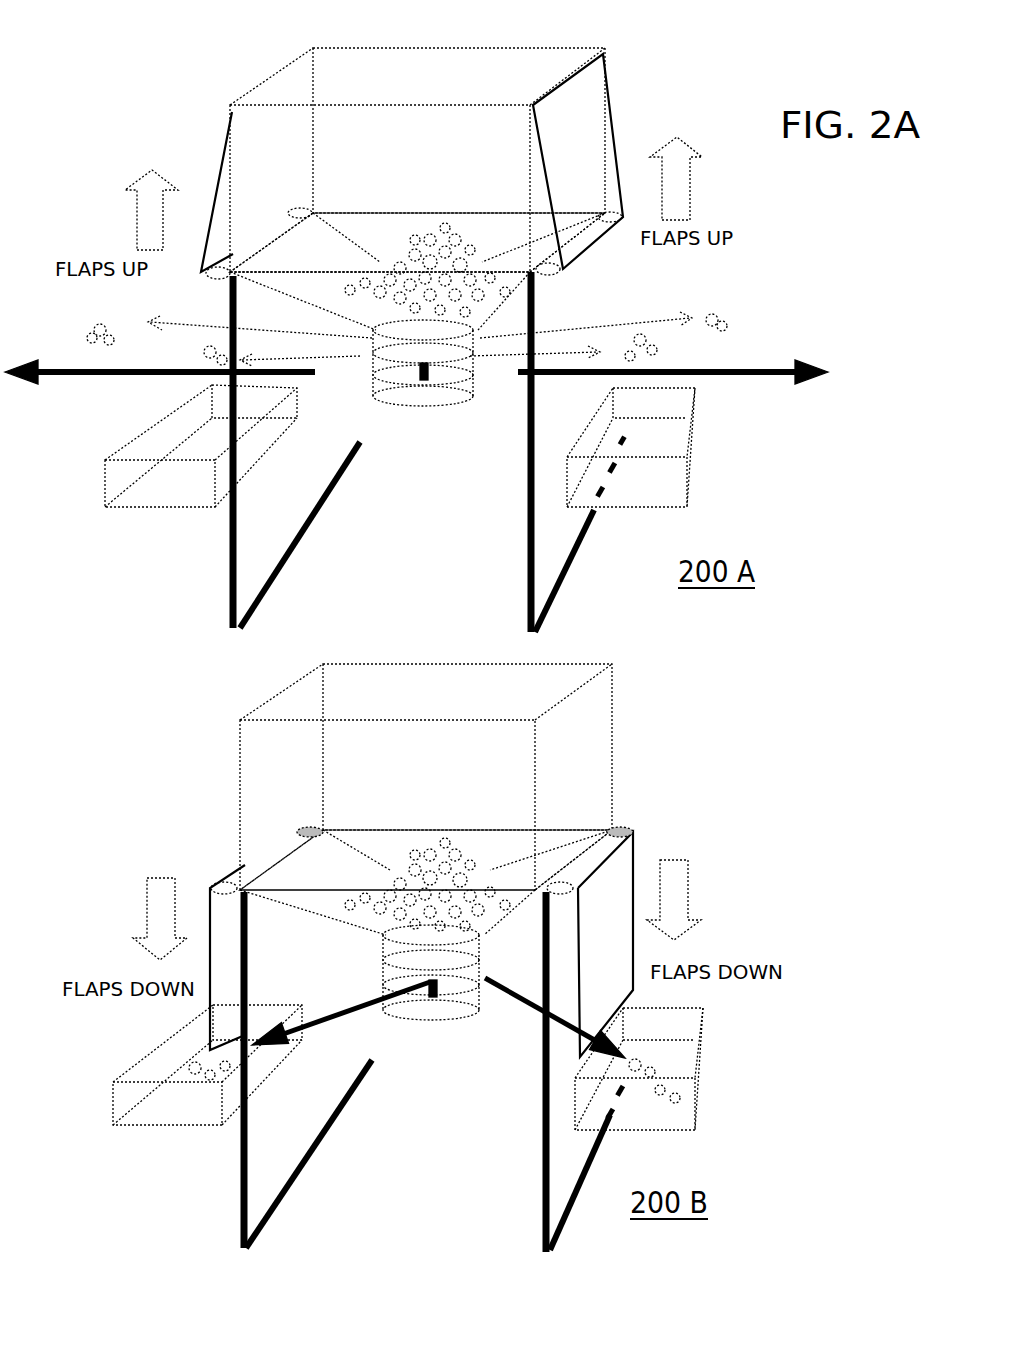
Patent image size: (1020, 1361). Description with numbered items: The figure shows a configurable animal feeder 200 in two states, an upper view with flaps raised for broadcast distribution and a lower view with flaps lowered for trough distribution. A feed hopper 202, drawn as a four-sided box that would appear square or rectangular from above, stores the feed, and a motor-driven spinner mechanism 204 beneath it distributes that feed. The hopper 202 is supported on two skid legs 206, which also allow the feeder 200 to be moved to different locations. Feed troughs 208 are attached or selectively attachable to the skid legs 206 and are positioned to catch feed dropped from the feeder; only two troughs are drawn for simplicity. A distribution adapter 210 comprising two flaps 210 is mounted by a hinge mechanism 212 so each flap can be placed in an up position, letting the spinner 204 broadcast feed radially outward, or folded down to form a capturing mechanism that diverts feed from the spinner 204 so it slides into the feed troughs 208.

The configurable animal feeder 200 is at (204, 87).
The feed hopper 202 is at (560, 52).
The motor-driven spinner mechanism 204 is at (232, 563).
The skid legs 206 is at (522, 557).
The feed troughs 208 is at (150, 498).
The distribution adapter flap 210 is at (214, 178).
The hinge mechanism 212 is at (560, 273).